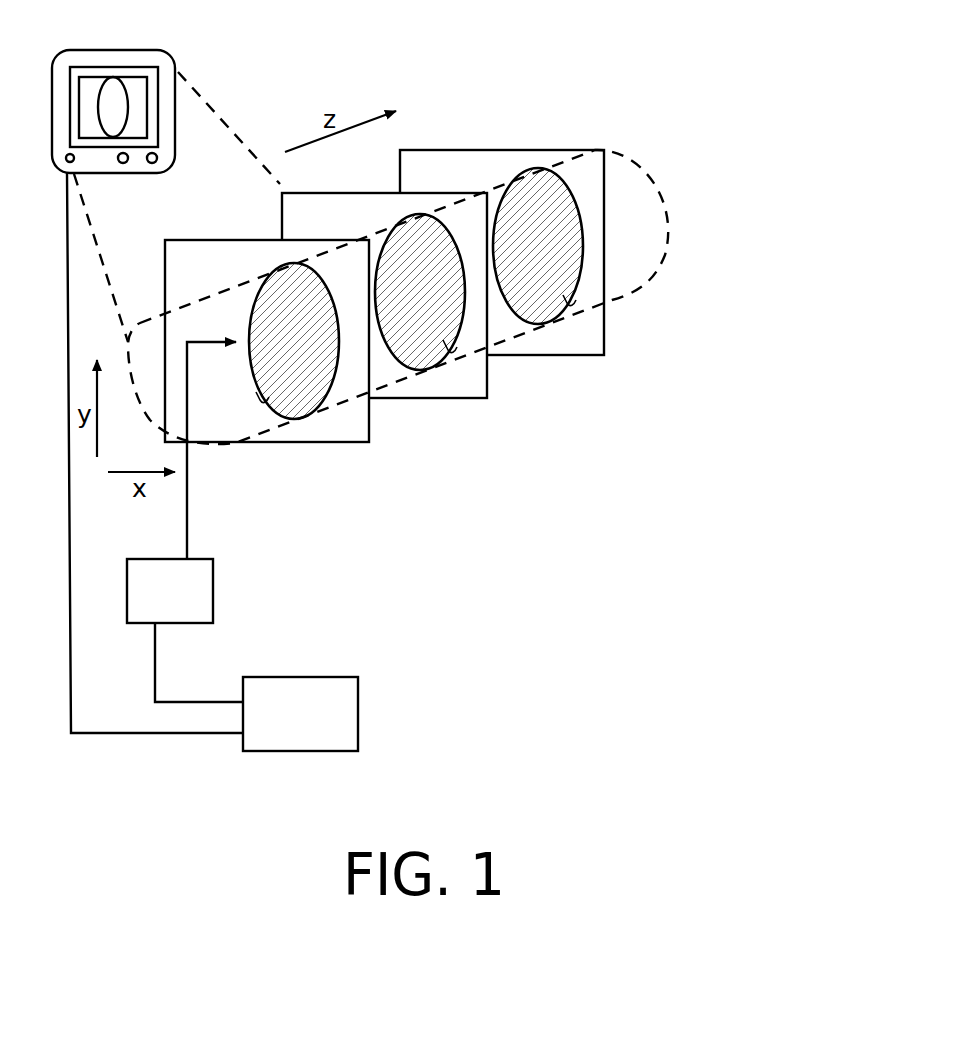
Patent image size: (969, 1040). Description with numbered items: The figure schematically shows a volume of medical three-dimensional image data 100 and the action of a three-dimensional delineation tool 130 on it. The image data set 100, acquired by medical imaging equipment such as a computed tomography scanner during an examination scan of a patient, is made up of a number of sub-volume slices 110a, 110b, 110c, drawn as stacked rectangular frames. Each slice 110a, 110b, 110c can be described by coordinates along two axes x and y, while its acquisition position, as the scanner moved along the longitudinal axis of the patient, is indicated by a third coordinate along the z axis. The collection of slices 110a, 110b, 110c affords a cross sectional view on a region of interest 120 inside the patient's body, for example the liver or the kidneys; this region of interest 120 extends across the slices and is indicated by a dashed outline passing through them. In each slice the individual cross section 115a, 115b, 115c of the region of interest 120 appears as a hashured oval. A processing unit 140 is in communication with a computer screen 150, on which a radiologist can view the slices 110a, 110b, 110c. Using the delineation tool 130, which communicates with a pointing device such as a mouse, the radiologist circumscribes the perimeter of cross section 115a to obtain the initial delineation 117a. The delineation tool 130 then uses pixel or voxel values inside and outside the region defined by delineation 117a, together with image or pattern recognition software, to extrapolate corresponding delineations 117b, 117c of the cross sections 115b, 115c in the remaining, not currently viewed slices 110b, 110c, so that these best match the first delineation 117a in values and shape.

The volume of medical 3D image data 100 is at (592, 490).
The sub-volume slice 110a is at (355, 444).
The sub-volume slice 110b is at (487, 398).
The sub-volume slice 110c is at (603, 355).
The cross section 115a is at (288, 397).
The cross section 115b is at (400, 366).
The cross section 115c is at (517, 293).
The delineation 117a is at (260, 400).
The delineation 117b is at (448, 350).
The delineation 117c is at (567, 300).
The region of interest 120 is at (666, 235).
The 3D delineation tool 130 is at (213, 597).
The processing unit 140 is at (358, 695).
The computer screen 150 is at (175, 67).